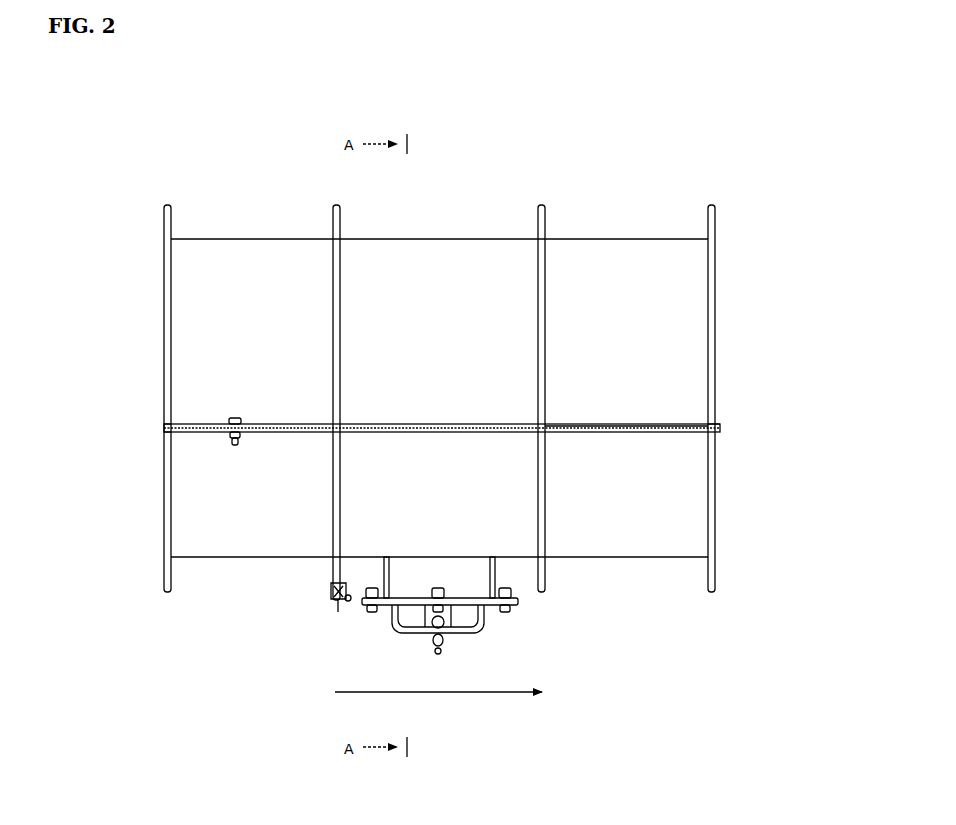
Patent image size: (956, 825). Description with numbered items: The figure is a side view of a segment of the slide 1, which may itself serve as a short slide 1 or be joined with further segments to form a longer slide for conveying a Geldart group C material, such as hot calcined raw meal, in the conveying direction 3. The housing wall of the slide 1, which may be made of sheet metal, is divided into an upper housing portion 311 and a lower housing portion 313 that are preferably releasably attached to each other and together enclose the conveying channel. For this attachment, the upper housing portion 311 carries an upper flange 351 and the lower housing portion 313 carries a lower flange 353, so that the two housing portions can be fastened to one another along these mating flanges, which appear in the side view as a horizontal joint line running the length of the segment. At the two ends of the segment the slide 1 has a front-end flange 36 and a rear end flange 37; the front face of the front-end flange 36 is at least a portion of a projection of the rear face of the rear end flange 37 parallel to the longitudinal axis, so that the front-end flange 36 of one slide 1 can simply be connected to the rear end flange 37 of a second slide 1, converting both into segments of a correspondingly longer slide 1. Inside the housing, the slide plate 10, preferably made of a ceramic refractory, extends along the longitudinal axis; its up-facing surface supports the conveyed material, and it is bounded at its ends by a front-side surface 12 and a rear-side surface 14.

The slide 1 is at (494, 160).
The conveying direction 3 is at (438, 708).
The slide plate 10 is at (163, 448).
The front-side surface 12 is at (720, 432).
The rear-side surface 14 is at (161, 444).
The front-end flange 36 is at (712, 220).
The rear end flange 37 is at (166, 229).
The upper housing portion 311 is at (271, 239).
The lower housing portion 313 is at (668, 537).
The upper flange 351 is at (195, 423).
The lower flange 353 is at (680, 428).